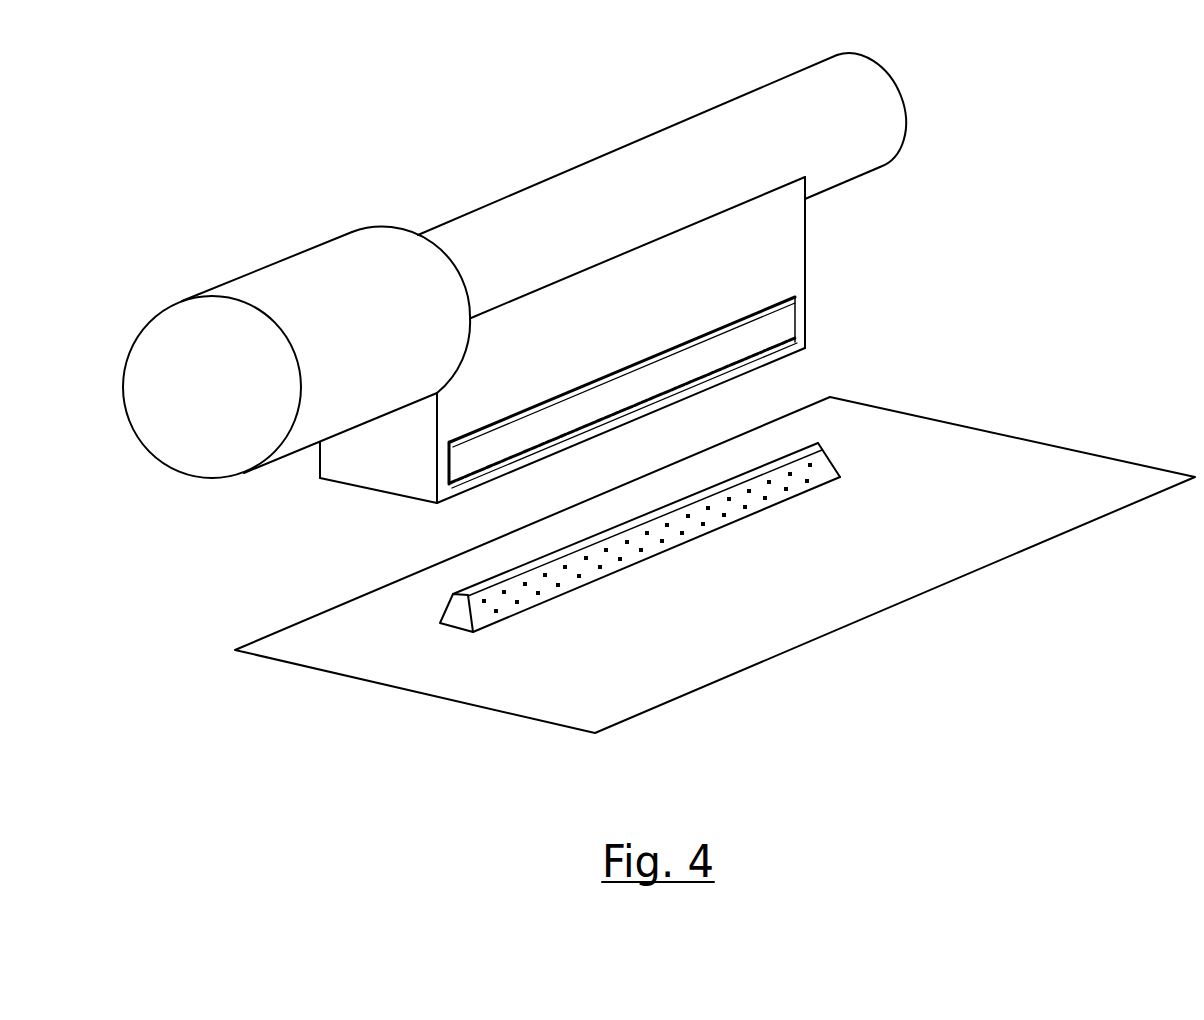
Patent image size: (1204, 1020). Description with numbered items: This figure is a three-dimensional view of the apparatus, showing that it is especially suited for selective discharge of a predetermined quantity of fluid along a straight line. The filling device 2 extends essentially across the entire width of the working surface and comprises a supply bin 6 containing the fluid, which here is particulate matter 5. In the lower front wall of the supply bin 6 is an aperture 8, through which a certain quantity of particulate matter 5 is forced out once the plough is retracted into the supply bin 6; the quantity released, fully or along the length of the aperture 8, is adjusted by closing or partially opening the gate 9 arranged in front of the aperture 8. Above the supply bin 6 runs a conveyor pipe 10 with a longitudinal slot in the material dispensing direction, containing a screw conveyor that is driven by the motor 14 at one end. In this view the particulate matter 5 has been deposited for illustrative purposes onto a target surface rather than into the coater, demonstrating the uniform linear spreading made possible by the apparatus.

The filling device 2 is at (651, 94).
The particulate matter 5 is at (648, 540).
The supply bin 6 is at (767, 252).
The aperture 8 is at (797, 345).
The gate 9 is at (762, 333).
The conveyor pipe 10 is at (832, 93).
The motor 14 is at (317, 270).